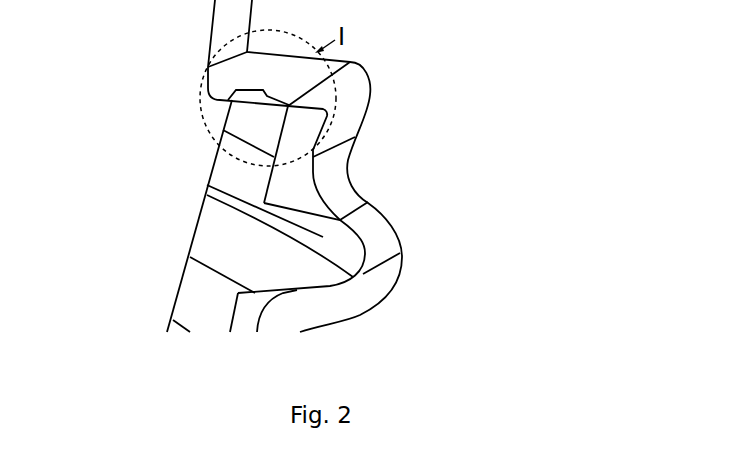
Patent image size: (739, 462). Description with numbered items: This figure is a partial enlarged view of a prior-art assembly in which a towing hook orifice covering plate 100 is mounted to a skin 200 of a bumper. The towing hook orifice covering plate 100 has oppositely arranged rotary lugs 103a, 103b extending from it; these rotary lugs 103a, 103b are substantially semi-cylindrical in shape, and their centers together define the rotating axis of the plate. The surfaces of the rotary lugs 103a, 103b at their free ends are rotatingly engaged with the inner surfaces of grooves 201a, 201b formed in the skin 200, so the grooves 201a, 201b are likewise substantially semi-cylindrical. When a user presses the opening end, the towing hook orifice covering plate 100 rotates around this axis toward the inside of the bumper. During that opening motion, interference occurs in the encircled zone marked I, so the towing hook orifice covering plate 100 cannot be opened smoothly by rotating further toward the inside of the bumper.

The towing hook orifice covering plate 100 is at (180, 275).
The rotary lug 103a is at (207, 185).
The rotary lug 103b is at (234, 217).
The skin 200 is at (395, 288).
The groove 201a is at (372, 251).
The groove 201b is at (418, 234).